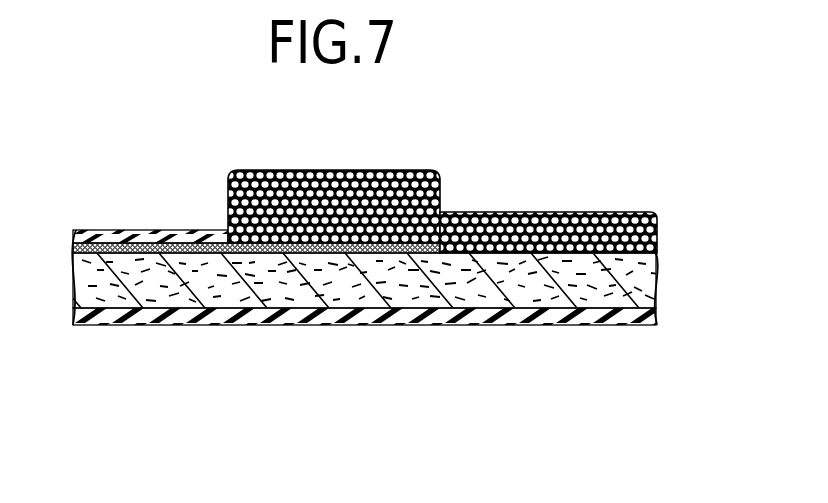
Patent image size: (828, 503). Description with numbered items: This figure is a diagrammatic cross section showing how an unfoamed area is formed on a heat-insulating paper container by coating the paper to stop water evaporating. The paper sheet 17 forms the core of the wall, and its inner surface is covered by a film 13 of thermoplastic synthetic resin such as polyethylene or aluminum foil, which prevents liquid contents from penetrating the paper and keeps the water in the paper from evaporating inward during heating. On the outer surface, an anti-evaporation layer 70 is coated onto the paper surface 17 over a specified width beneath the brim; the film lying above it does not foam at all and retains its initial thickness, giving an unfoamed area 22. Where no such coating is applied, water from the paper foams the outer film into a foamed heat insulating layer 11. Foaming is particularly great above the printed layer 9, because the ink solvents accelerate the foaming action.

The anti-evaporation layer 70 is at (102, 230).
The unfoamed area 22 is at (171, 230).
The foamed heat insulating layer 11 is at (383, 170).
The printed layer 9 is at (440, 212).
The paper sheet 17 is at (637, 284).
The film 13 is at (637, 318).